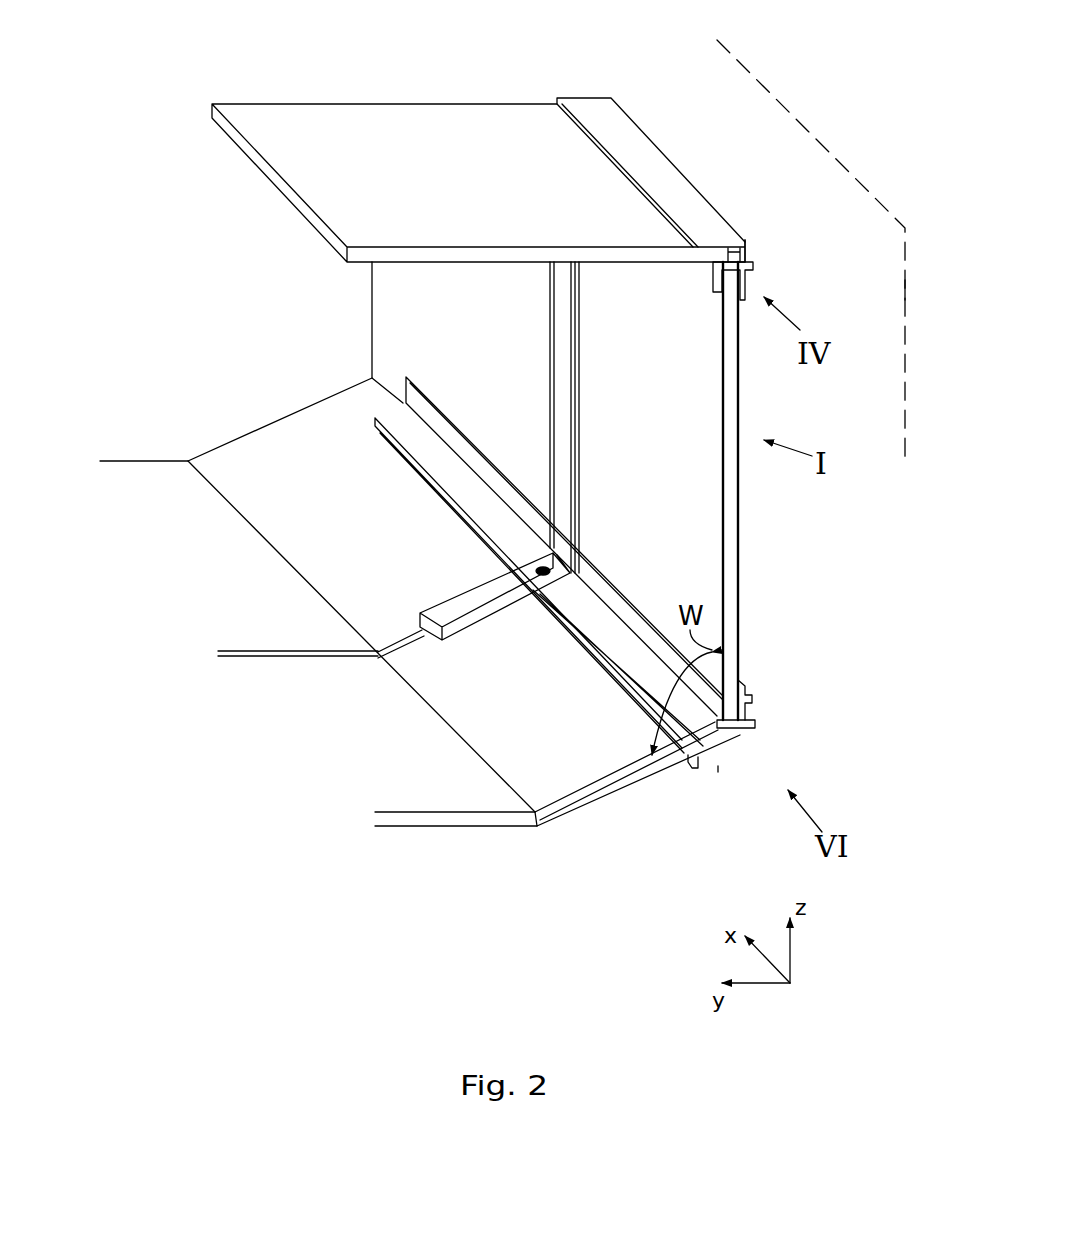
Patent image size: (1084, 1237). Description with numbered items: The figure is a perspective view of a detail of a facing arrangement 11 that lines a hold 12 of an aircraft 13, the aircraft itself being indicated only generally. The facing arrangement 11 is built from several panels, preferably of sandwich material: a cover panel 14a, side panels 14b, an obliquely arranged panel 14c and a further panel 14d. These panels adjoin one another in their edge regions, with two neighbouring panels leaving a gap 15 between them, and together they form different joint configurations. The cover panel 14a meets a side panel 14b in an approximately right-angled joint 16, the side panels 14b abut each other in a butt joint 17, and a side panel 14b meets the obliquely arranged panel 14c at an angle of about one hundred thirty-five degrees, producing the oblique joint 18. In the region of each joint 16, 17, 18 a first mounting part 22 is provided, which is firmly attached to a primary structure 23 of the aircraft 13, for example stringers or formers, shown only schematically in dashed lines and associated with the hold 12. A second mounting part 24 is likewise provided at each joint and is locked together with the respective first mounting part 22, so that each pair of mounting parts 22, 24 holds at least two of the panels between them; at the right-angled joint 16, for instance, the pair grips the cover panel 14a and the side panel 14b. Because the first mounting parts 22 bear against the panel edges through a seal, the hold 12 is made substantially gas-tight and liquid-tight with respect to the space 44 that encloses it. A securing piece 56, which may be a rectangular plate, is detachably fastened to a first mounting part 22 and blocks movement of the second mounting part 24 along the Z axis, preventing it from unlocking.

The facing arrangement 11 is at (370, 355).
The hold 12 is at (157, 277).
The aircraft 13 is at (806, 84).
The cover panel 14a is at (393, 116).
The side panel 14b is at (375, 298).
The obliquely arranged panel 14c is at (272, 420).
The panel 14d is at (158, 470).
The gap 15 is at (748, 290).
The right-angled joint 16 is at (765, 238).
The butt joint 17 is at (548, 340).
The oblique joint 18 is at (718, 770).
The first mounting part 22 is at (655, 172).
The primary structure 23 is at (905, 292).
The second mounting part 24 is at (732, 276).
The space 44 is at (849, 627).
The piece 56 is at (539, 572).